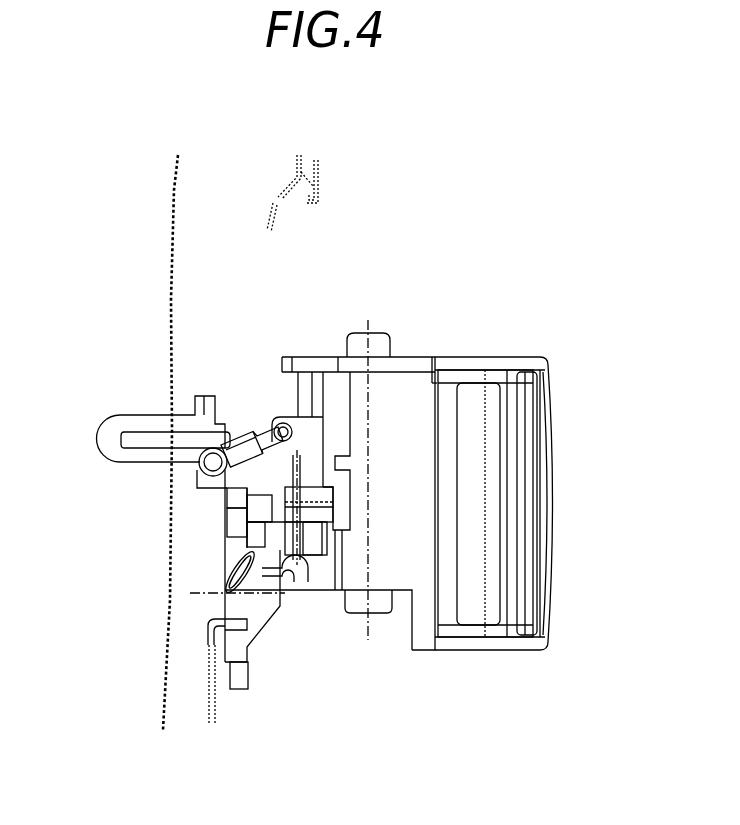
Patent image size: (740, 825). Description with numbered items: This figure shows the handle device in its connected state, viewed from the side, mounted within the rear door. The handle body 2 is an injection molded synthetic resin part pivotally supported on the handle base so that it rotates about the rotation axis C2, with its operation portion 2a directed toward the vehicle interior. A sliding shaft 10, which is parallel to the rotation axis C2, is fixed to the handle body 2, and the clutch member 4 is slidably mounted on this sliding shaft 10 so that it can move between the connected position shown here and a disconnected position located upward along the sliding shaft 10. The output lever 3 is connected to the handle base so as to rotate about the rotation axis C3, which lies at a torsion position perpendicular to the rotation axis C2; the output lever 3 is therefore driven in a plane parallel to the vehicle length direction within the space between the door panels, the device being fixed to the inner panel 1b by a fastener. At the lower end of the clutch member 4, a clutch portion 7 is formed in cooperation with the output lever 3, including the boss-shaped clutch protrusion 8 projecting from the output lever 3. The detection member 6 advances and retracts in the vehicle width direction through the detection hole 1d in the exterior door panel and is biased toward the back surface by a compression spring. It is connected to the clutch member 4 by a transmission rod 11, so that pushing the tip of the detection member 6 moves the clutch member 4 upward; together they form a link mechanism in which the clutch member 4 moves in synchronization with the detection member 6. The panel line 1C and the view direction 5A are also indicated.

The vehicle body panel line 1C is at (172, 225).
The inner panel 1b is at (320, 166).
The detection hole 1d is at (170, 477).
The handle body 2 is at (567, 414).
The operation portion 2a is at (545, 506).
The output lever 3 is at (258, 617).
The clutch member 4 is at (313, 440).
The viewing direction 5A is at (458, 287).
The detection member 6 is at (108, 452).
The clutch portion 7 is at (222, 579).
The clutch protrusion 8 is at (304, 515).
The sliding shaft 10 is at (305, 380).
The transmission rod 11 is at (260, 437).
The rotation axis C2 is at (372, 640).
The rotation axis C3 is at (190, 597).